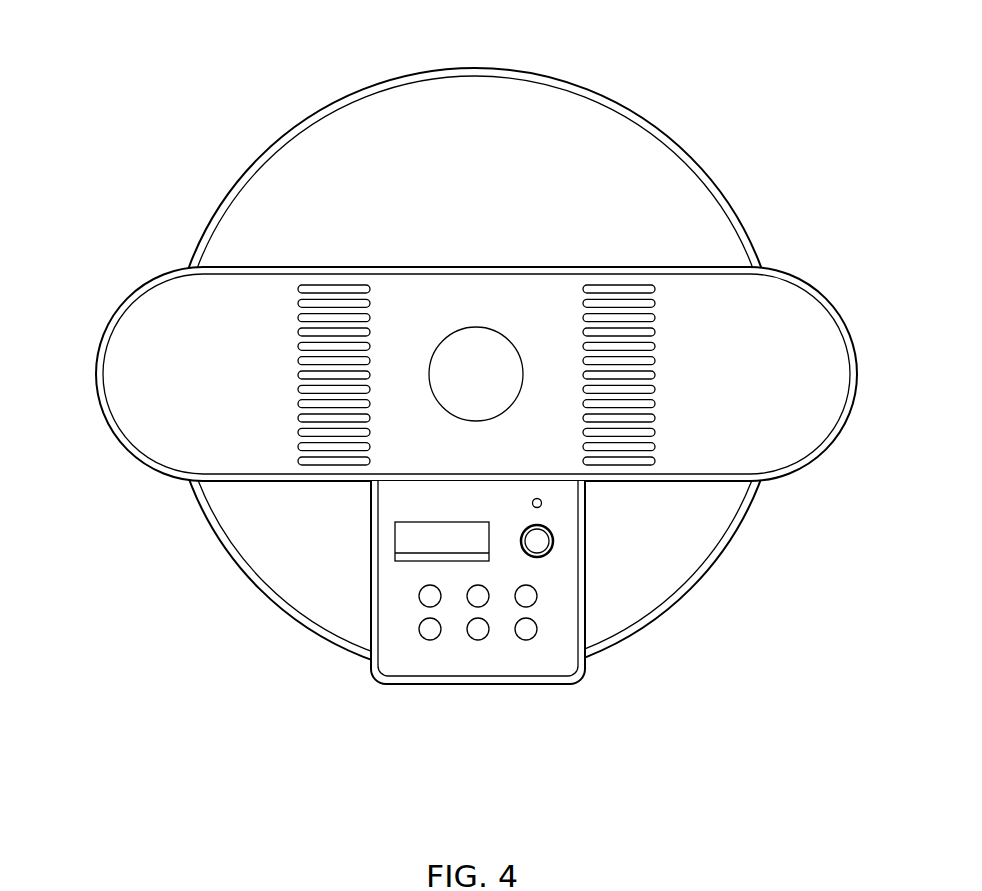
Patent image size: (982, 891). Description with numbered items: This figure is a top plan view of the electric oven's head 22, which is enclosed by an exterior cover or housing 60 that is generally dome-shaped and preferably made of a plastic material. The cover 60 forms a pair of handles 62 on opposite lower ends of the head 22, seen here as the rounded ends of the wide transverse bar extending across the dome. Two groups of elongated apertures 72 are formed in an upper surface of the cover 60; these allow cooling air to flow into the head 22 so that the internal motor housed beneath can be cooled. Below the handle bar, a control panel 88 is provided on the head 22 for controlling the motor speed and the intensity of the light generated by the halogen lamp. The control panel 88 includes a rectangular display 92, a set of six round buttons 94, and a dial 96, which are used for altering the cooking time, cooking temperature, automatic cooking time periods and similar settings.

The head 22 is at (292, 74).
The exterior cover 60 is at (557, 112).
The handles 62 is at (125, 316).
The apertures 72 is at (617, 305).
The control panel 88 is at (382, 690).
The display 92 is at (407, 537).
The buttons 94 is at (480, 632).
The dials 96 is at (540, 541).